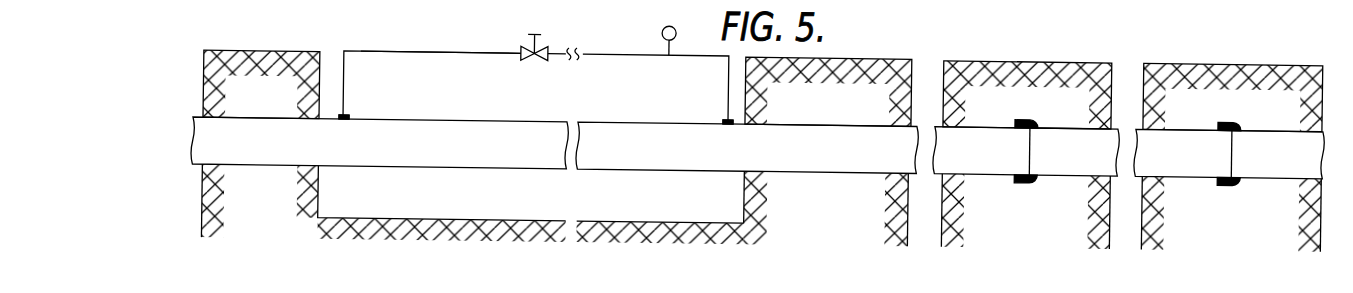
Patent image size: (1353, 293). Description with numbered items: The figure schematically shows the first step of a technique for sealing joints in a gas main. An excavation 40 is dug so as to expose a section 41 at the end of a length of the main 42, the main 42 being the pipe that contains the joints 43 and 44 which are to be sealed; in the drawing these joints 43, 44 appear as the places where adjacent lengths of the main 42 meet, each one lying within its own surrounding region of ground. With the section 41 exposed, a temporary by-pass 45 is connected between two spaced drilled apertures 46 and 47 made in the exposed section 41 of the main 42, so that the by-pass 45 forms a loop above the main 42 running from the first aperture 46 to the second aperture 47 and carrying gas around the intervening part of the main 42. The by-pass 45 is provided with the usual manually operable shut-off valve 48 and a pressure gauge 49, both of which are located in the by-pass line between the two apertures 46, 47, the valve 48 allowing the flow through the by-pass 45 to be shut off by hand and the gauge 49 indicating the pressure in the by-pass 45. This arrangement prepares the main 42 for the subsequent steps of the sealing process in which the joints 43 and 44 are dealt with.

The excavation 40 is at (390, 68).
The exposed section 41 is at (507, 164).
The main 42 is at (808, 115).
The joint 43 is at (1032, 110).
The joint 44 is at (1240, 112).
The temporary by-pass 45 is at (455, 49).
The drilled aperture 46 is at (345, 111).
The drilled aperture 47 is at (727, 111).
The shut-off valve 48 is at (543, 38).
The pressure gauge 49 is at (661, 26).